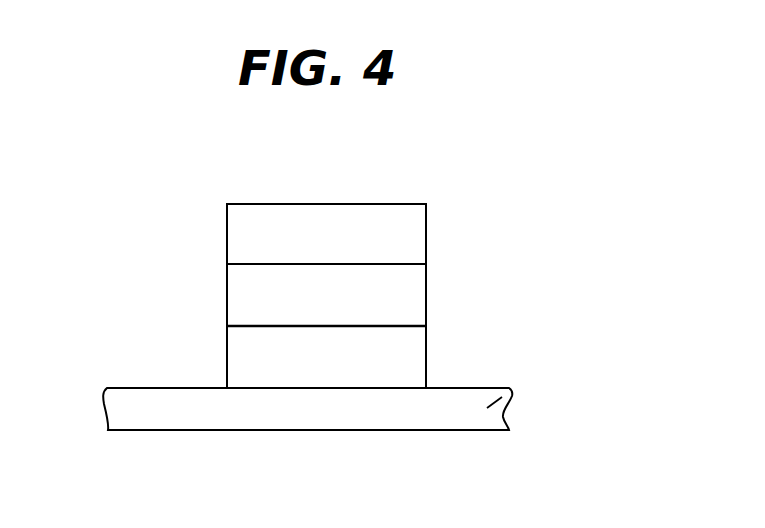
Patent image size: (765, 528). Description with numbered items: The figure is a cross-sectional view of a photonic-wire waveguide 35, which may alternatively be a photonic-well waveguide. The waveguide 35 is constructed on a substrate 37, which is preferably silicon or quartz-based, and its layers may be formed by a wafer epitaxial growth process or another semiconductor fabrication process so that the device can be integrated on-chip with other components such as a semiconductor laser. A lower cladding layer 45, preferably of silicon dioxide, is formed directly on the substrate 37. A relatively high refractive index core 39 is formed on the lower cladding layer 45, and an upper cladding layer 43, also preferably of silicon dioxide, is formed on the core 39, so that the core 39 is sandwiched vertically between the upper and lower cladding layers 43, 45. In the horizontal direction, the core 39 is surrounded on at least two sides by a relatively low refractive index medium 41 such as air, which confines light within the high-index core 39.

The waveguide 35 is at (298, 264).
The upper cladding layer 43 is at (257, 232).
The core 39 is at (411, 300).
The lower cladding layer 45 is at (411, 370).
The low refractive index medium 41 is at (140, 288).
The substrate 37 is at (509, 388).